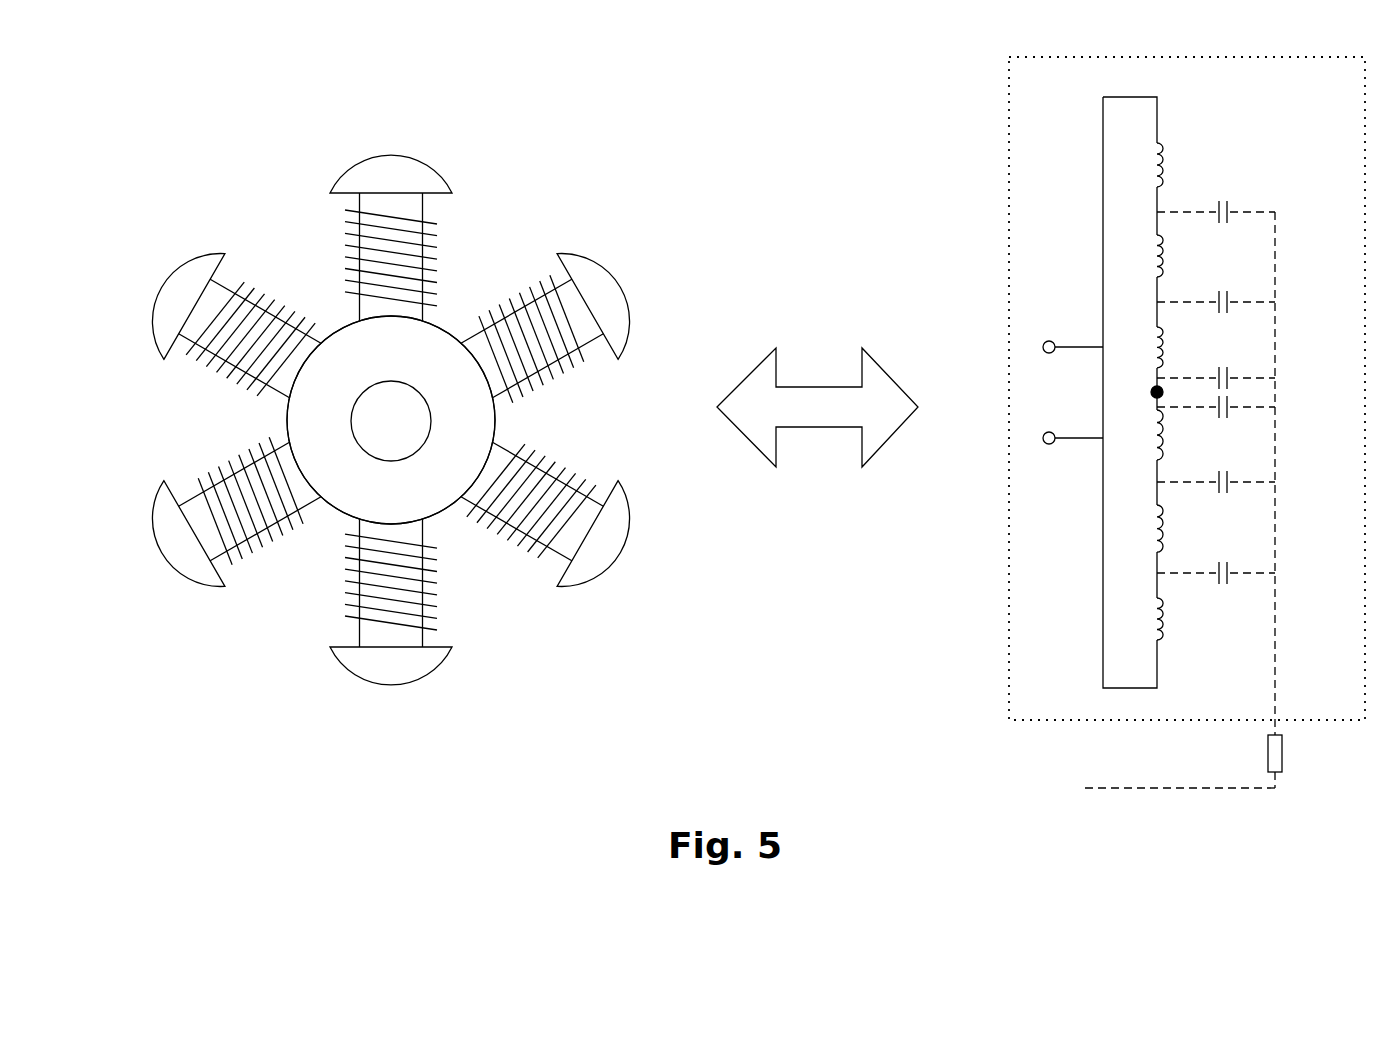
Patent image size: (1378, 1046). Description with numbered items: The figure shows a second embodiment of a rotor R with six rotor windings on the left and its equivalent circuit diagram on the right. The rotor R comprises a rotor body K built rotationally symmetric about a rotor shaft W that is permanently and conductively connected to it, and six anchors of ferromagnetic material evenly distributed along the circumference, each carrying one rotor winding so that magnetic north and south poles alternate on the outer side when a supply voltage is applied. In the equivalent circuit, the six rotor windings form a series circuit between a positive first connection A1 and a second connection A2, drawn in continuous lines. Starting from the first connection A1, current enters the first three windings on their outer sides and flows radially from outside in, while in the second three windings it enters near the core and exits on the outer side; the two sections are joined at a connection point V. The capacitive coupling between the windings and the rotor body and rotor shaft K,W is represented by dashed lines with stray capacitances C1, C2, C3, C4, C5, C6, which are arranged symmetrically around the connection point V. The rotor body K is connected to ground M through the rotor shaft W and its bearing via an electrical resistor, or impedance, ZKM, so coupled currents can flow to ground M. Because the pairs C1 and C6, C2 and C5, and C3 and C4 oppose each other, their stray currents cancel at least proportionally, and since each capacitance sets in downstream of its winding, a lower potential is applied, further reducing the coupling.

The rotor R is at (564, 152).
The rotor shaft W is at (381, 432).
The rotor body K is at (338, 515).
The stray capacitance C1 is at (1216, 200).
The stray capacitance C2 is at (1216, 290).
The stray capacitance C3 is at (1216, 365).
The stray capacitance C4 is at (1216, 420).
The stray capacitance C5 is at (1216, 494).
The stray capacitance C6 is at (1216, 590).
The first connection A1 is at (1070, 333).
The second connection A2 is at (1070, 458).
The connection point V is at (1166, 392).
The rotor body and rotor shaft K,W is at (1278, 436).
The ground M is at (1082, 781).
The electrical resistor (impedance) ZKM is at (1298, 753).